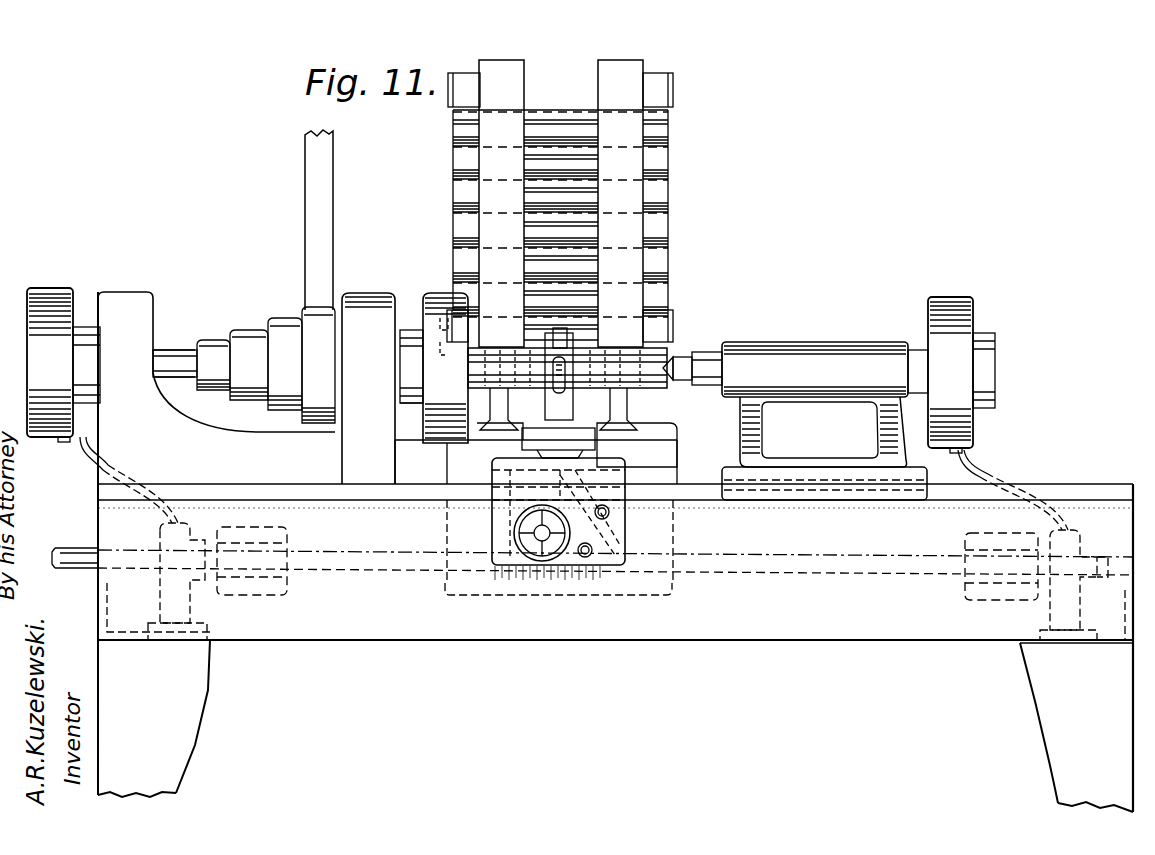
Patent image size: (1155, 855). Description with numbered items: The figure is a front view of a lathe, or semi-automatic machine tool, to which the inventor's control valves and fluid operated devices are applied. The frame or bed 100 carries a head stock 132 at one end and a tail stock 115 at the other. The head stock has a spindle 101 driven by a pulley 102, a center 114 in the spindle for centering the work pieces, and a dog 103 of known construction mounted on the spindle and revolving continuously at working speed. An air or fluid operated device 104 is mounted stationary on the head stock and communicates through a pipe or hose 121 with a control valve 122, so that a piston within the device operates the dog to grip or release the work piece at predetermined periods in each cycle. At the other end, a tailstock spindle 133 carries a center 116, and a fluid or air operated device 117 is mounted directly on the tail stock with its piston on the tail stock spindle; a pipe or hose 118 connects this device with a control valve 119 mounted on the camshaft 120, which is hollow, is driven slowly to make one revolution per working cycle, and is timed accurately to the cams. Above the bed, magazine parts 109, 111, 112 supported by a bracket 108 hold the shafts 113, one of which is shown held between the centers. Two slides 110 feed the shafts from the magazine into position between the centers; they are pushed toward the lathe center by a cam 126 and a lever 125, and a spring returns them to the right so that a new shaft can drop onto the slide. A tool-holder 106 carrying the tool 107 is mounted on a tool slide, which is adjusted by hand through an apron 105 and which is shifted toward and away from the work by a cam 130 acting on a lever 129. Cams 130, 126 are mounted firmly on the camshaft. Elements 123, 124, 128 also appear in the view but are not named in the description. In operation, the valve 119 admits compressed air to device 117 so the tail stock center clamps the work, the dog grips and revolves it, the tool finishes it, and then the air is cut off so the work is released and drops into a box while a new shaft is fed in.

The frame or bed 100 is at (420, 628).
The spindle 101 is at (178, 355).
The pulley 102 is at (284, 330).
The dog 103 is at (437, 312).
The air or fluid operated device 104 is at (42, 330).
The apron 105 is at (628, 540).
The tool-holder 106 is at (618, 395).
The tool 107 is at (645, 385).
The bracket 108 is at (500, 458).
The magazine part 109 is at (455, 410).
The slides 110 is at (618, 408).
The magazine part 111 is at (620, 300).
The magazine part 112 is at (462, 92).
The shafts 113 is at (655, 206).
The center 114 is at (420, 330).
The tail stock 115 is at (838, 358).
The center 116 is at (705, 362).
The fluid or air operated device 117 is at (955, 378).
The pipe or hose 118 is at (975, 466).
The control valve 119 is at (1068, 535).
The camshaft 120 is at (850, 572).
The pipe or hose 121 is at (92, 443).
The control valve 122 is at (160, 540).
The guide 123 is at (468, 470).
The guide 124 is at (607, 455).
The lever 125 is at (500, 480).
The cam 126 is at (520, 580).
The gear 128 is at (614, 580).
The lever 129 is at (610, 540).
The cam 130 is at (580, 560).
The head stock 132 is at (216, 378).
The tailstock spindle 133 is at (700, 350).